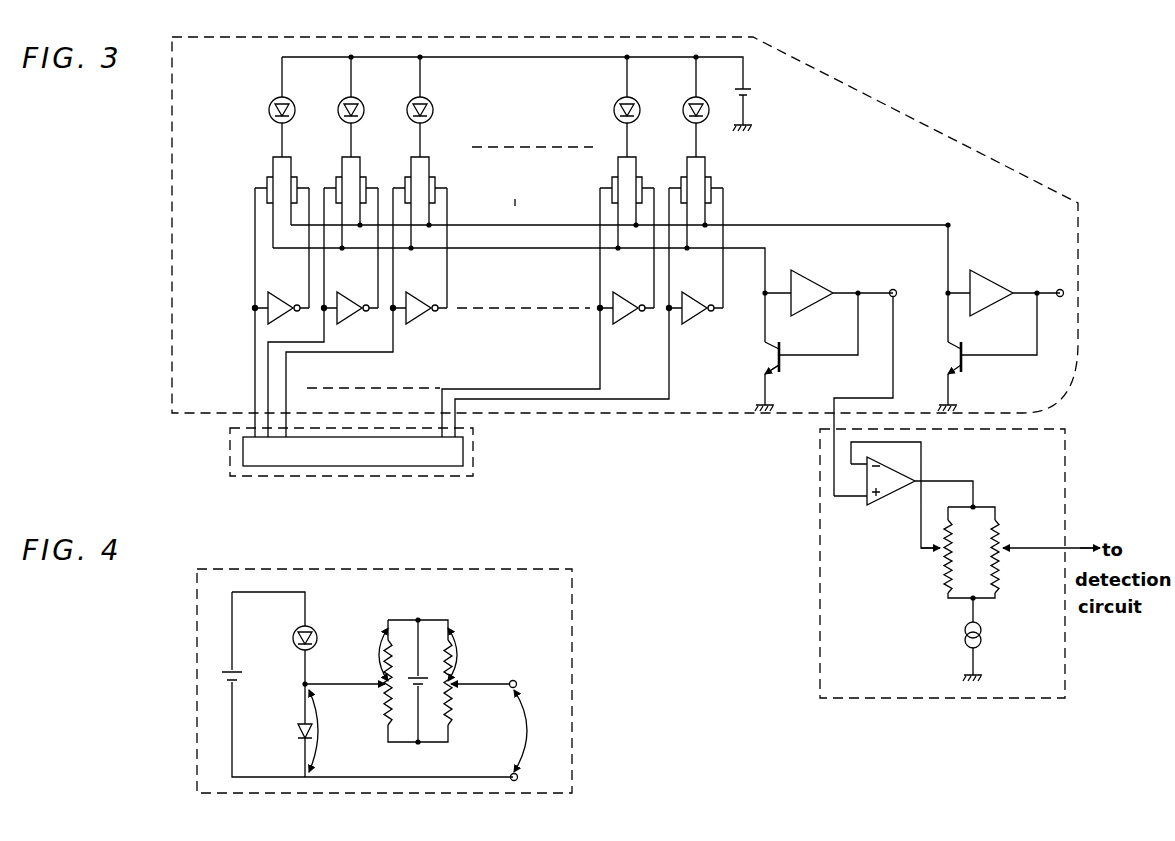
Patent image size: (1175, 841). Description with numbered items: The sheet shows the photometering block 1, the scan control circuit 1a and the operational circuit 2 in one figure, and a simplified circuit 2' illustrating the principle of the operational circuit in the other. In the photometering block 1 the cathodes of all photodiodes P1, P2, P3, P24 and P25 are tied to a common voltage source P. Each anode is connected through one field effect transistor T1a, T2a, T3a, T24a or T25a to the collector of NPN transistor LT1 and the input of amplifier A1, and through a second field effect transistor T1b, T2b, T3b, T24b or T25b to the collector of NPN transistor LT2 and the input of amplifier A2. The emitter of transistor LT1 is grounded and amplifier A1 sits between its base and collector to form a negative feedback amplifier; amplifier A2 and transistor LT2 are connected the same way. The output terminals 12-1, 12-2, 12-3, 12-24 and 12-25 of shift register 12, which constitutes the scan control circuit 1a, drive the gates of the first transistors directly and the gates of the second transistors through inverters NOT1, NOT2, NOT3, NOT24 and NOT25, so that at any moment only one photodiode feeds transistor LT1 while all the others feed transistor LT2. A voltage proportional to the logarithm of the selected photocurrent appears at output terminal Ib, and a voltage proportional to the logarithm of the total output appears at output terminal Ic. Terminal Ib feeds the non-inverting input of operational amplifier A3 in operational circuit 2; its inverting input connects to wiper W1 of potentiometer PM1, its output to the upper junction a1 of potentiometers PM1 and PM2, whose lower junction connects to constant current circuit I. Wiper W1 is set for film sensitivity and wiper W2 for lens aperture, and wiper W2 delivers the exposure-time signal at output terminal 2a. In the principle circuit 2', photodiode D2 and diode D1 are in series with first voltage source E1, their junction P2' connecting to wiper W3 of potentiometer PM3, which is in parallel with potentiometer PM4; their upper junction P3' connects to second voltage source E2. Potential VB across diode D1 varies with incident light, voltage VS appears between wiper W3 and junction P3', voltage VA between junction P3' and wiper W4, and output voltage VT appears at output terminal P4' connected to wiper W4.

In FIG. 3, the photometering block 1 is at (863, 92).
In FIG. 3, the scan control circuit 1a is at (463, 457).
In FIG. 3, the shift register 12 is at (243, 452).
In FIG. 3, the output terminal of shift register 12-1 is at (251, 404).
In FIG. 3, the output terminal of shift register 12-2 is at (268, 375).
In FIG. 3, the output terminal of shift register 12-3 is at (286, 375).
In FIG. 3, the output terminal of shift register 12-24 is at (447, 386).
In FIG. 3, the output terminal of shift register 12-25 is at (499, 399).
In FIG. 3, the operational circuit 2 is at (960, 539).
In FIG. 3, the output terminal 2a is at (1098, 492).
In FIG. 4, the circuit 2' is at (384, 662).
In FIG. 3, the common voltage source P is at (517, 92).
In FIG. 3, the photodiode P1 is at (269, 102).
In FIG. 3, the photodiode P2 is at (332, 107).
In FIG. 3, the photodiode P3 is at (402, 107).
In FIG. 3, the photodiode P24 is at (617, 105).
In FIG. 3, the photodiode P25 is at (686, 104).
In FIG. 3, the field effect transistor T1a is at (267, 183).
In FIG. 3, the field effect transistor T1b is at (300, 180).
In FIG. 3, the field effect transistor T2a is at (334, 180).
In FIG. 3, the field effect transistor T2b is at (367, 182).
In FIG. 3, the field effect transistor T3a is at (404, 180).
In FIG. 3, the field effect transistor T3b is at (435, 182).
In FIG. 3, the field effect transistor T24a is at (611, 182).
In FIG. 3, the field effect transistor T24b is at (641, 182).
In FIG. 3, the field effect transistor T25a is at (704, 202).
In FIG. 3, the field effect transistor T25b is at (710, 182).
In FIG. 3, the inverter NOT1 is at (284, 293).
In FIG. 3, the inverter NOT2 is at (345, 317).
In FIG. 3, the inverter NOT3 is at (415, 317).
In FIG. 3, the inverter NOT24 is at (625, 316).
In FIG. 3, the inverter NOT25 is at (697, 316).
In FIG. 3, the amplifier A1 is at (818, 270).
In FIG. 3, the amplifier A2 is at (992, 270).
In FIG. 3, the operational amplifier A3 is at (880, 497).
In FIG. 3, the NPN transistor LT1 is at (768, 361).
In FIG. 3, the NPN transistor LT2 is at (952, 358).
In FIG. 3, the output terminal Ib is at (893, 289).
In FIG. 3, the output terminal Ic is at (1060, 289).
In FIG. 3, the upper junction of potentiometers a1 is at (974, 505).
In FIG. 3, the wiper of potentiometer PM1 W1 is at (925, 550).
In FIG. 3, the wiper of potentiometer PM2 W2 is at (1040, 550).
In FIG. 3, the potentiometer PM1 is at (945, 570).
In FIG. 3, the potentiometer PM2 is at (997, 580).
In FIG. 3, the constant current circuit I is at (981, 646).
In FIG. 4, the first voltage source E1 is at (245, 686).
In FIG. 4, the second voltage source E2 is at (427, 678).
In FIG. 4, the diode D1 is at (296, 728).
In FIG. 4, the photodiode D2 is at (293, 632).
In FIG. 4, the junction P2' is at (322, 673).
In FIG. 4, the upper junction P3' is at (418, 577).
In FIG. 4, the output terminal P4' is at (529, 674).
In FIG. 4, the wiper of potentiometer PM3 W3 is at (357, 683).
In FIG. 4, the wiper of potentiometer PM4 W4 is at (458, 684).
In FIG. 4, the potentiometer PM3 is at (388, 700).
In FIG. 4, the potentiometer PM4 is at (449, 710).
In FIG. 4, the voltage VS is at (371, 654).
In FIG. 4, the voltage VA is at (466, 654).
In FIG. 4, the potential across diode VB is at (326, 731).
In FIG. 4, the output voltage VT is at (534, 735).